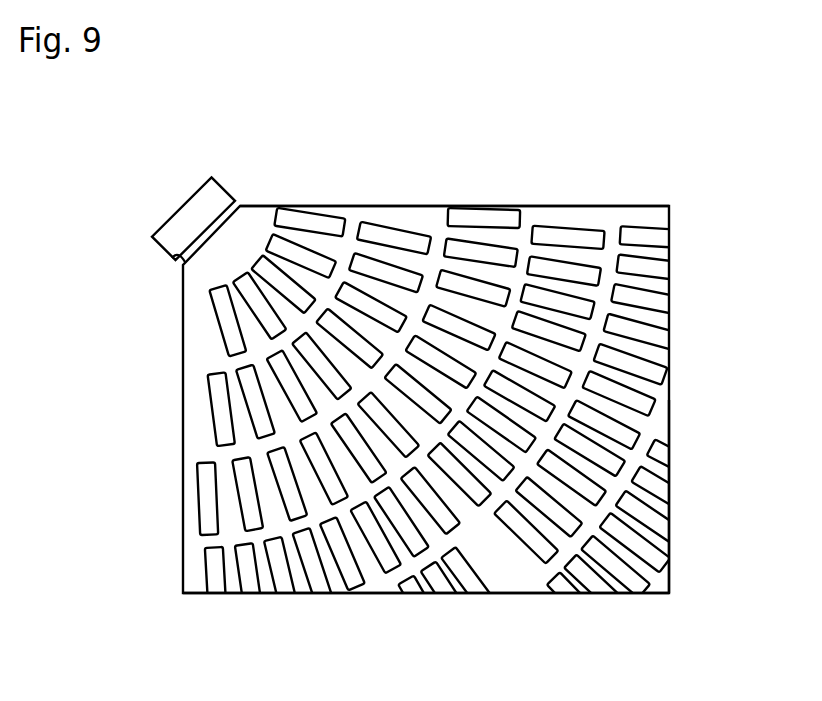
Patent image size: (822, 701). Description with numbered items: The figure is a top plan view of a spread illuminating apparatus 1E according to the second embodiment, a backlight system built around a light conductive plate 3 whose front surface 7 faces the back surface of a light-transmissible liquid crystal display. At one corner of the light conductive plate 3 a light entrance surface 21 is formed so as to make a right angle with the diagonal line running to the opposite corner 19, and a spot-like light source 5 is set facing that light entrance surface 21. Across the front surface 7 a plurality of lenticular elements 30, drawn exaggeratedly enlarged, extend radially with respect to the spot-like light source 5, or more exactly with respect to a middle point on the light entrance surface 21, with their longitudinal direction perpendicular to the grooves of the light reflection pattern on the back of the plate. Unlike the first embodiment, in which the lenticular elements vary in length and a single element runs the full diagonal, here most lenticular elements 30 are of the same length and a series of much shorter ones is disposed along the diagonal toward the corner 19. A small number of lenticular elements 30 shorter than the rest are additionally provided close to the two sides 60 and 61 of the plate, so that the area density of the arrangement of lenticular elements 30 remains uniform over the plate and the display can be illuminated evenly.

The spread illuminating apparatus 1E is at (528, 182).
The light conductive plate 3 is at (672, 193).
The spot-like light source 5 is at (188, 213).
The front surface 7 is at (419, 206).
The another corner 19 is at (668, 595).
The light entrance surface 21 is at (178, 254).
The lenticular elements 30 is at (212, 332).
The side 60 is at (502, 594).
The side 61 is at (668, 470).